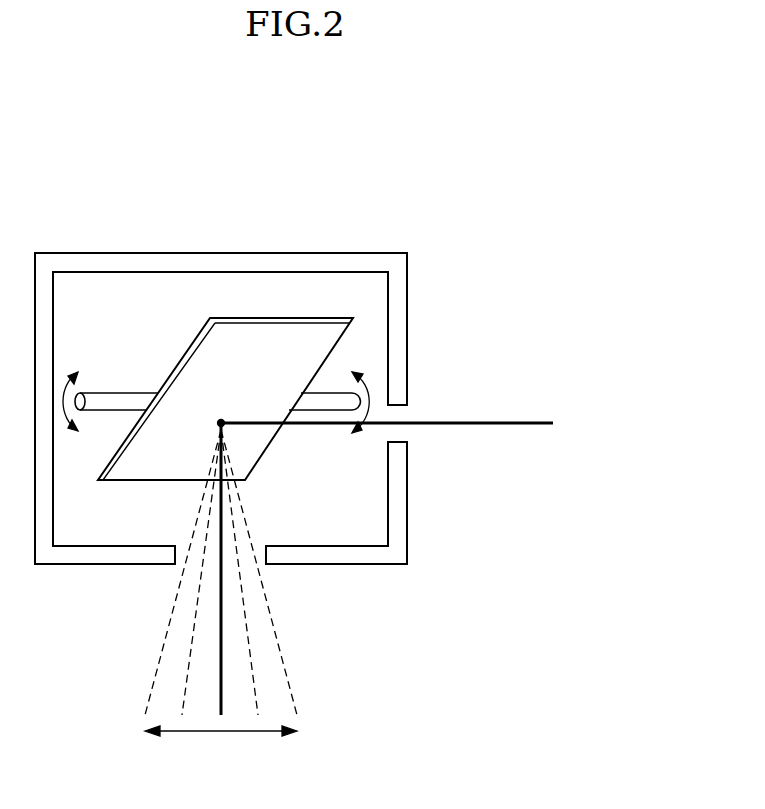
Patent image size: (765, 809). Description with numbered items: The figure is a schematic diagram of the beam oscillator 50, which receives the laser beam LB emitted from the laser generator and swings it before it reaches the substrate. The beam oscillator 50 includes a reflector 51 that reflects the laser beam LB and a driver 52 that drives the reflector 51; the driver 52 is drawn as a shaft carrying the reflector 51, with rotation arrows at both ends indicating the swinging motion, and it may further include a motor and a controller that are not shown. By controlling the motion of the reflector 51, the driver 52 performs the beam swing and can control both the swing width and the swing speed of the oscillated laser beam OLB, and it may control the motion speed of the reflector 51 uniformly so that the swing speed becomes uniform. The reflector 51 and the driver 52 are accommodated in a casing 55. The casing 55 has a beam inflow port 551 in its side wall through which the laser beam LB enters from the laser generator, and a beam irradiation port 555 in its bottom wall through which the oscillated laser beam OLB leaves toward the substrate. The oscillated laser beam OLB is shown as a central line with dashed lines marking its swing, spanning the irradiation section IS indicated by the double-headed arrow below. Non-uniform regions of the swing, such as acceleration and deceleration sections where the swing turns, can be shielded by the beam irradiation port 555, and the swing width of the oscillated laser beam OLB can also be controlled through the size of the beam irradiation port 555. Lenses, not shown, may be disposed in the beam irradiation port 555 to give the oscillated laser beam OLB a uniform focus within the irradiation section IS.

The beam oscillator 50 is at (204, 240).
The reflector 51 is at (297, 318).
The driver 52 is at (116, 392).
The casing 55 is at (407, 283).
The beam inflow port 551 is at (400, 410).
The beam irradiation port 555 is at (178, 564).
The laser beam LB is at (520, 423).
The oscillated laser beam OLB is at (221, 644).
The irradiation section IS is at (221, 745).